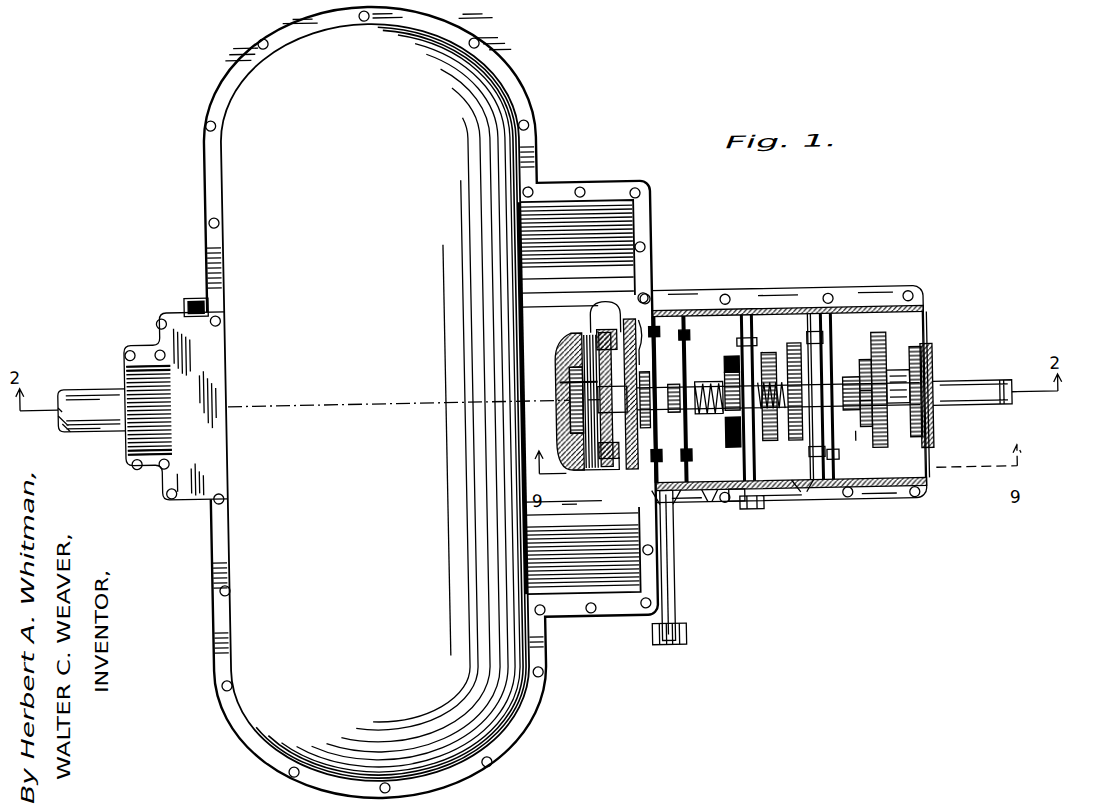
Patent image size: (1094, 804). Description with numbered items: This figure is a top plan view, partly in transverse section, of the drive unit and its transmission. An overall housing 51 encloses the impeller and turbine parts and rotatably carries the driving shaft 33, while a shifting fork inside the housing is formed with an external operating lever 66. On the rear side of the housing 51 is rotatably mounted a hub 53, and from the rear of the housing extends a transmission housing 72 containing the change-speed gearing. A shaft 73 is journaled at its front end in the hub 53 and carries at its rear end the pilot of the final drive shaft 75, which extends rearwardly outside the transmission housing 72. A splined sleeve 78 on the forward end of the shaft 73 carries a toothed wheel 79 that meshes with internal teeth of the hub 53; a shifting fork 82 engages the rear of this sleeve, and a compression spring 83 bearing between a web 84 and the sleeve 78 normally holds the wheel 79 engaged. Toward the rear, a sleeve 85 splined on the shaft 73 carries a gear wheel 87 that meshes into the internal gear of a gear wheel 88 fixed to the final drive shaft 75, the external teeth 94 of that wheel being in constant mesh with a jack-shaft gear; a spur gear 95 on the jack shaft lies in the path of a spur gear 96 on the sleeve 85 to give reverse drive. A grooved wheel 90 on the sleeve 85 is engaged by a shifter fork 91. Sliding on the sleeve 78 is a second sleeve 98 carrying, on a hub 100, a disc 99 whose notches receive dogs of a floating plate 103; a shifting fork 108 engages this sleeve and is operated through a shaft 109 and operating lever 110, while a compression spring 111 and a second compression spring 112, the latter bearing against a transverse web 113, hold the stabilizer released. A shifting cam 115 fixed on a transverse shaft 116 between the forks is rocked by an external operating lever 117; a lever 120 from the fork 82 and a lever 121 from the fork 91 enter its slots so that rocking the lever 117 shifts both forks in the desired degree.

The housing 51 is at (526, 103).
The driving shaft 33 is at (90, 384).
The operating lever 66 is at (192, 295).
The compression spring 111 is at (574, 372).
The hub 53 is at (556, 436).
The hub 100 is at (597, 296).
The floating plate 103 is at (620, 324).
The toothed wheel 79 is at (561, 386).
The shaft 73 is at (563, 408).
The second sleeve 98 is at (612, 399).
The transverse web 113 is at (609, 475).
The disc 99 is at (600, 478).
The transmission housing 72 is at (846, 321).
The shifting fork 108 is at (667, 321).
The shaft 116 is at (754, 322).
The shifter fork 91 is at (822, 321).
The sleeve 78 is at (700, 371).
The compression spring 83 is at (705, 391).
The web 84 is at (725, 437).
The shifting fork 82 is at (730, 457).
The spur gear 95 is at (770, 360).
The spur gear 96 is at (795, 351).
The sleeve 85 is at (846, 386).
The gear wheel 88 is at (872, 356).
The external teeth 94 is at (900, 352).
The gear wheel 87 is at (849, 432).
The grooved wheel 90 is at (829, 466).
The final drive shaft 75 is at (985, 396).
The shaft 109 is at (673, 604).
The operating lever 110 is at (686, 638).
The second compression spring 112 is at (675, 496).
The lever 120 is at (707, 508).
The shifting cam 115 is at (734, 512).
The operating lever 117 is at (769, 508).
The lever 121 is at (801, 491).